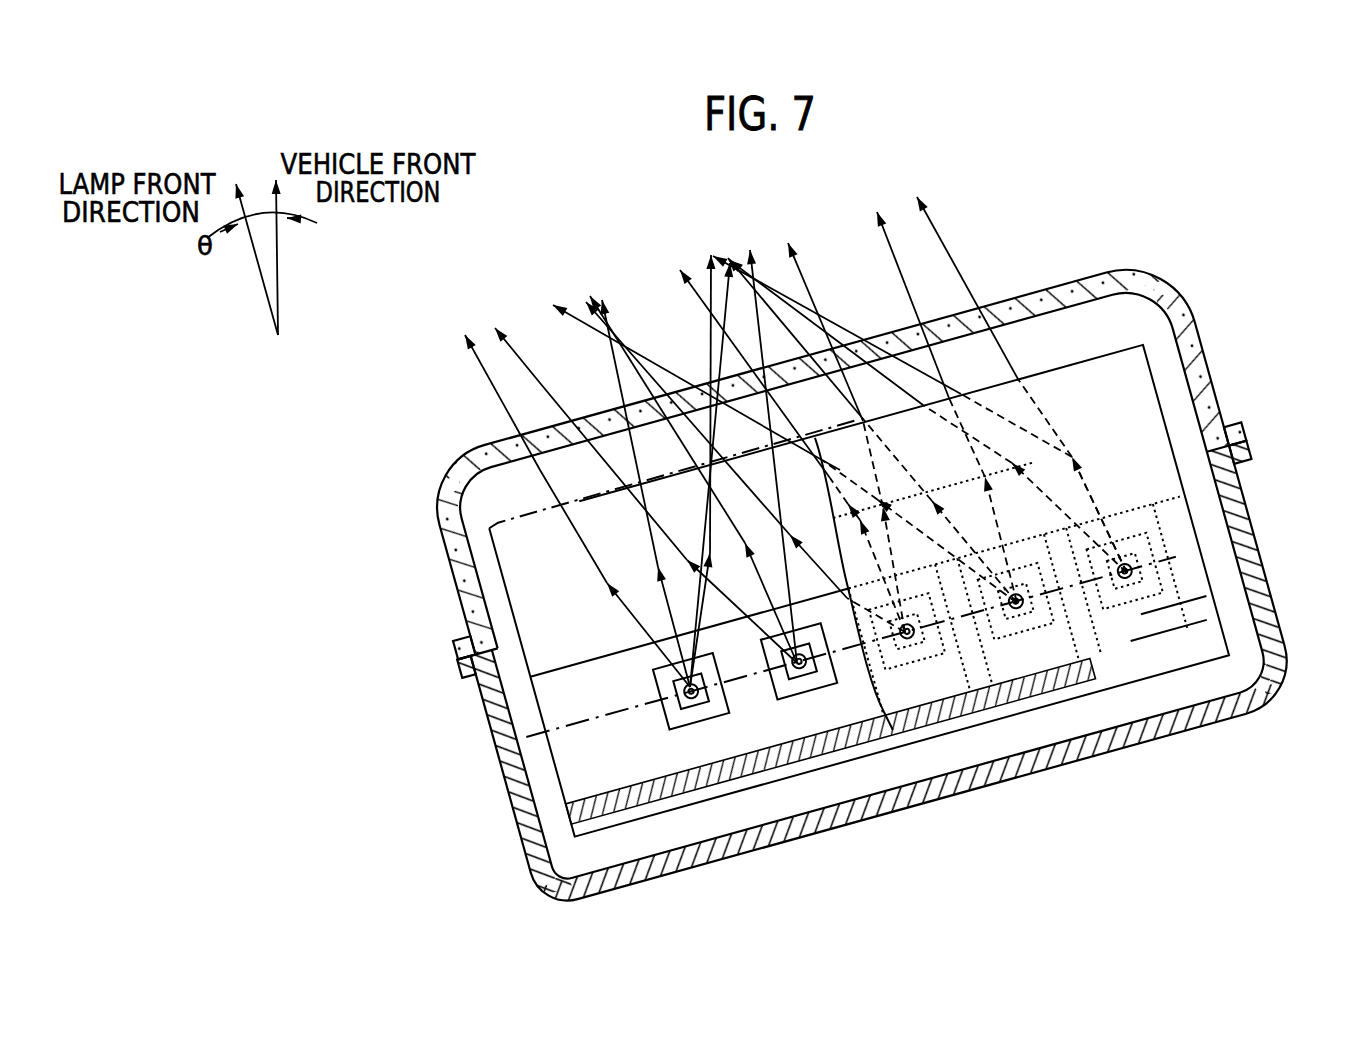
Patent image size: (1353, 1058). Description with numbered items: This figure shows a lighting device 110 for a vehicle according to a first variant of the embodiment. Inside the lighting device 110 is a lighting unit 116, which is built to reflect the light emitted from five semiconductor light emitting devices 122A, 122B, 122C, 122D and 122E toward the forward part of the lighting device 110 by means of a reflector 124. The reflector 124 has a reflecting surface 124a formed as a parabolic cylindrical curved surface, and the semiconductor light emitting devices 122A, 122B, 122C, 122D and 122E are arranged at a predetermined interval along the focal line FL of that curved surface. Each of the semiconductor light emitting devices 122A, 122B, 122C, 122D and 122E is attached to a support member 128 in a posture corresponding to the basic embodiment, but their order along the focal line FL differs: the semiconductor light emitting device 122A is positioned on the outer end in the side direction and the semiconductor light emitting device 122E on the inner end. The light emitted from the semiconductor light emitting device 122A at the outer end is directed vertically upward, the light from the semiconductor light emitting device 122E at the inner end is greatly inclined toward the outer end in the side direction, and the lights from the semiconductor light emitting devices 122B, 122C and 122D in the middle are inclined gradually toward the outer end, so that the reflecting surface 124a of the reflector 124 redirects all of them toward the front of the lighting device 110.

The lighting device 110 is at (1207, 239).
The lighting unit 116 is at (1176, 406).
The semiconductor light emitting device 122A is at (705, 722).
The semiconductor light emitting device 122B is at (813, 690).
The semiconductor light emitting device 122C is at (918, 660).
The semiconductor light emitting device 122D is at (1030, 632).
The semiconductor light emitting device 122E is at (1137, 595).
The reflector 124 is at (1078, 360).
The reflecting surface 124a is at (907, 440).
The support member 128 is at (573, 770).
The focal line FL is at (620, 707).